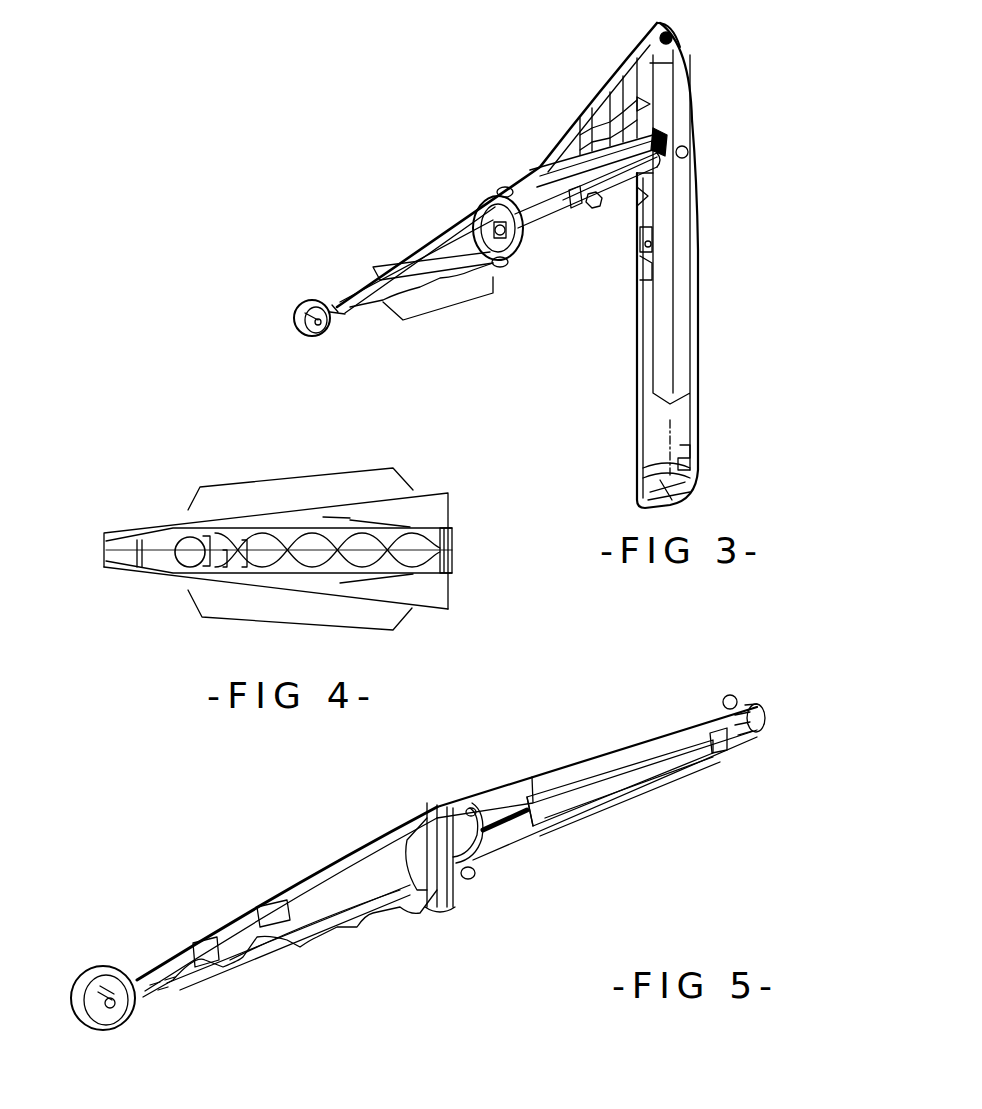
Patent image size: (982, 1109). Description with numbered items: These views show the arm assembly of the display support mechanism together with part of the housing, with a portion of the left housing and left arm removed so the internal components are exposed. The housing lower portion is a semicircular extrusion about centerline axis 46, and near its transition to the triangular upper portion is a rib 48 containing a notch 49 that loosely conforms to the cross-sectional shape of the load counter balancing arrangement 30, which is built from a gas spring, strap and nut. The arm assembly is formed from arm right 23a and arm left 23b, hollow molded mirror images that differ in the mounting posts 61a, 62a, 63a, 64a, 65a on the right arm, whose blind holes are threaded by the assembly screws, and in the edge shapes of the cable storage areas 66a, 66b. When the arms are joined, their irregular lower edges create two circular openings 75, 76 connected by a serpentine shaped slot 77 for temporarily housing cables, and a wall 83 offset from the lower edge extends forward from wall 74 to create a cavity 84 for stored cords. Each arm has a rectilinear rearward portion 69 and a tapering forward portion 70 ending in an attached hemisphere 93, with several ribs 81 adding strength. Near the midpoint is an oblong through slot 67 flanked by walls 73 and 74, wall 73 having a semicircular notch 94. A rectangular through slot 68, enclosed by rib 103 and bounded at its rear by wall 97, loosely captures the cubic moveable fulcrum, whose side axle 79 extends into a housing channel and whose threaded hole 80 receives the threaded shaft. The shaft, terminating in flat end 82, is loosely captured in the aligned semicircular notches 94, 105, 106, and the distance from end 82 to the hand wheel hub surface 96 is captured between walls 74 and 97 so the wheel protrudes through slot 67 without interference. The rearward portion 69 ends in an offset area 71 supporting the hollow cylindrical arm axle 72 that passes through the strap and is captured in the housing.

In FIG. 3, the load counter balancing arrangement 30 is at (702, 335).
In FIG. 3, the centerline axis 46 is at (672, 435).
In FIG. 3, the rib 48 is at (657, 253).
In FIG. 3, the notch 49 is at (650, 245).
In FIG. 3, the mounting post 61a is at (660, 148).
In FIG. 3, the flat end of shaft 82 is at (590, 100).
In FIG. 3, the threaded hole 80 is at (573, 210).
In FIG. 3, the axle 79 is at (592, 210).
In FIG. 3, the mounting post 63a is at (523, 253).
In FIG. 3, the mounting post 62a is at (503, 190).
In FIG. 3, the protruding hub surface 96 is at (503, 265).
In FIG. 3, the wall 83 is at (437, 257).
In FIG. 5, the wall 83 is at (253, 933).
In FIG. 3, the arm right 23a is at (460, 207).
In FIG. 4, the arm right 23a is at (173, 557).
In FIG. 4, the arm left 23b is at (173, 538).
In FIG. 3, the mounting post 64a is at (400, 253).
In FIG. 3, the cable storage area 66a is at (421, 305).
In FIG. 4, the cable storage area 66a is at (300, 625).
In FIG. 4, the cable storage area 66b is at (300, 477).
In FIG. 3, the mounting post 65a is at (323, 327).
In FIG. 3, the hemisphere 93 is at (302, 300).
In FIG. 5, the hemisphere 93 is at (82, 975).
In FIG. 4, the circular opening 75 is at (192, 547).
In FIG. 4, the serpentine shaped slot 77 is at (360, 540).
In FIG. 4, the circular opening 76 is at (427, 540).
In FIG. 5, the forward portion 70 is at (420, 803).
In FIG. 5, the rearward portion 69 is at (697, 712).
In FIG. 5, the ribs 81 is at (178, 993).
In FIG. 5, the cavity 84 is at (298, 942).
In FIG. 5, the wall 74 is at (410, 852).
In FIG. 5, the oblong through slot 67 is at (447, 832).
In FIG. 5, the semicircular notch 94 is at (464, 855).
In FIG. 5, the semicircular notch 105 is at (560, 837).
In FIG. 5, the wall 73 is at (440, 818).
In FIG. 5, the rib 103 is at (647, 787).
In FIG. 5, the rectangular through slot 68 is at (583, 800).
In FIG. 5, the semicircular notch 106 is at (706, 757).
In FIG. 5, the arm axle 72 is at (740, 702).
In FIG. 5, the offset area 71 is at (742, 728).
In FIG. 5, the wall 97 is at (735, 742).